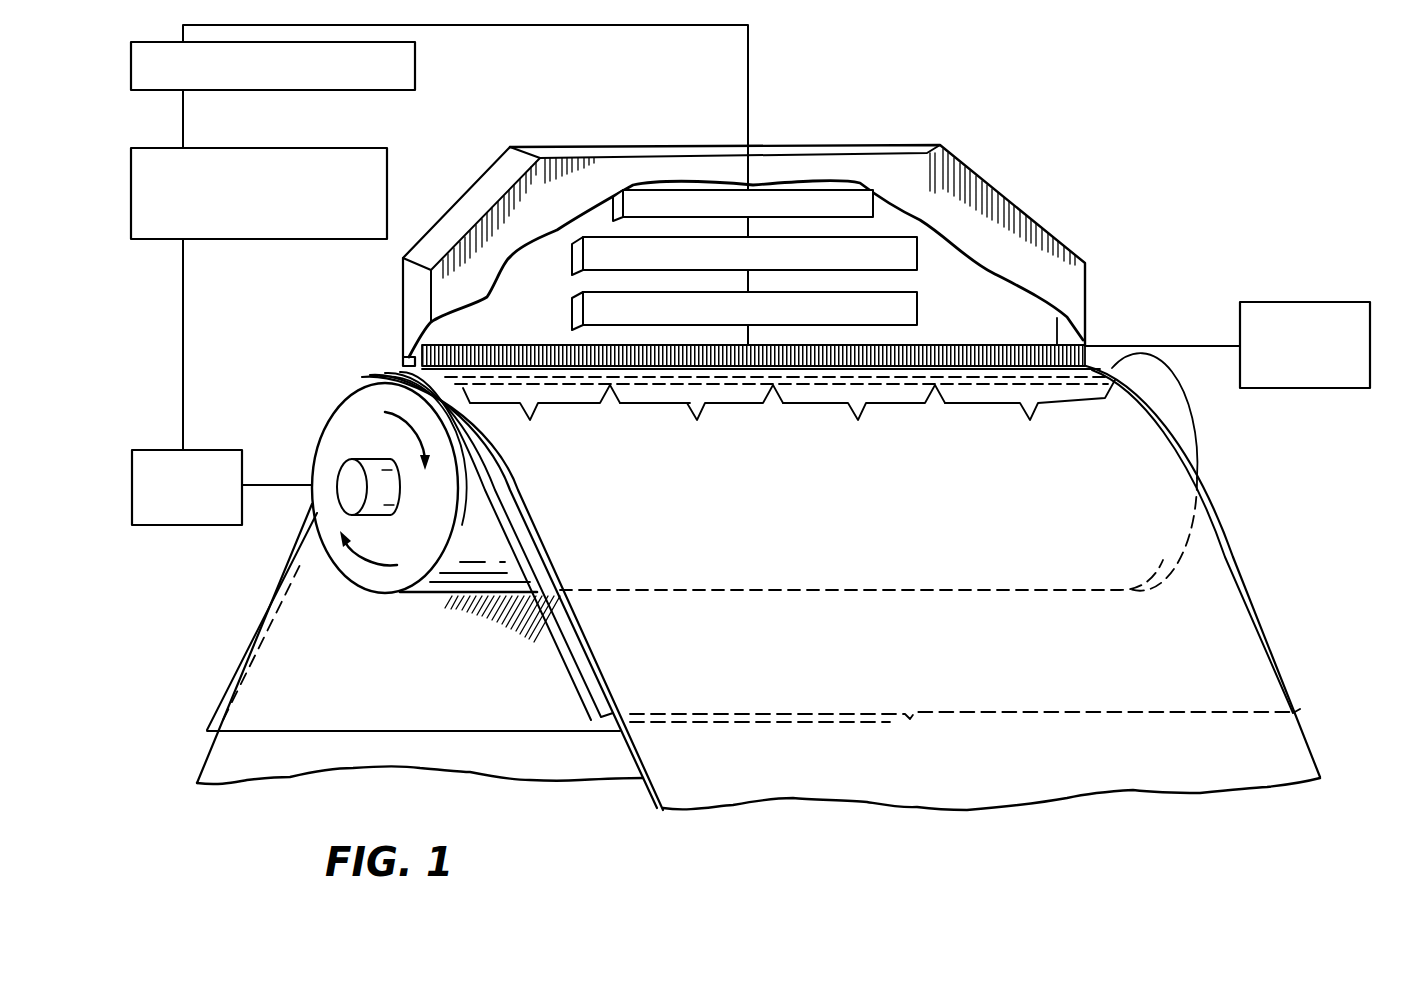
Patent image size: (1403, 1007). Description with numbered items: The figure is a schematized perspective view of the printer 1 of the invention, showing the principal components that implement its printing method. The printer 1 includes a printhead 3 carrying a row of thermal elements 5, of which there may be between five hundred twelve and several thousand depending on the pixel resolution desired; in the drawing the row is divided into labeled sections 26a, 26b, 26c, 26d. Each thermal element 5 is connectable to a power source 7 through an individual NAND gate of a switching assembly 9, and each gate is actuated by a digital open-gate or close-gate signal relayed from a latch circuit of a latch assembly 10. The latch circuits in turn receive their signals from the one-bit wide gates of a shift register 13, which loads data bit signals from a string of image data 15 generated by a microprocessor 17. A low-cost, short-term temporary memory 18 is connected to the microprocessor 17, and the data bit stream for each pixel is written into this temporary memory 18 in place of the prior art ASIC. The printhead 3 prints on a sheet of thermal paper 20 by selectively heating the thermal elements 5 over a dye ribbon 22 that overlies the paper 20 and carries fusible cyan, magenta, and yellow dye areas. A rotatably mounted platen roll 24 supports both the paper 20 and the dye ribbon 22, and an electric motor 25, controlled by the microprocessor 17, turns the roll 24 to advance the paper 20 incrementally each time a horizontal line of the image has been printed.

The printer 1 is at (1186, 104).
The printhead 3 is at (886, 110).
The thermal elements 5 is at (409, 357).
The power source 7 is at (1340, 302).
The switching assembly 9 is at (917, 309).
The latch assembly 10 is at (917, 254).
The shift register 13 is at (873, 203).
The string of image data 15 is at (556, 26).
The microprocessor 17 is at (350, 148).
The temporary memory 18 is at (417, 68).
The thermal paper 20 is at (582, 660).
The dye ribbon 22 is at (590, 698).
The platen roll 24 is at (444, 594).
The electric motor 25 is at (241, 462).
The print element section 26a is at (535, 410).
The print element section 26b is at (702, 410).
The print element section 26c is at (863, 410).
The print element section 26d is at (1035, 410).